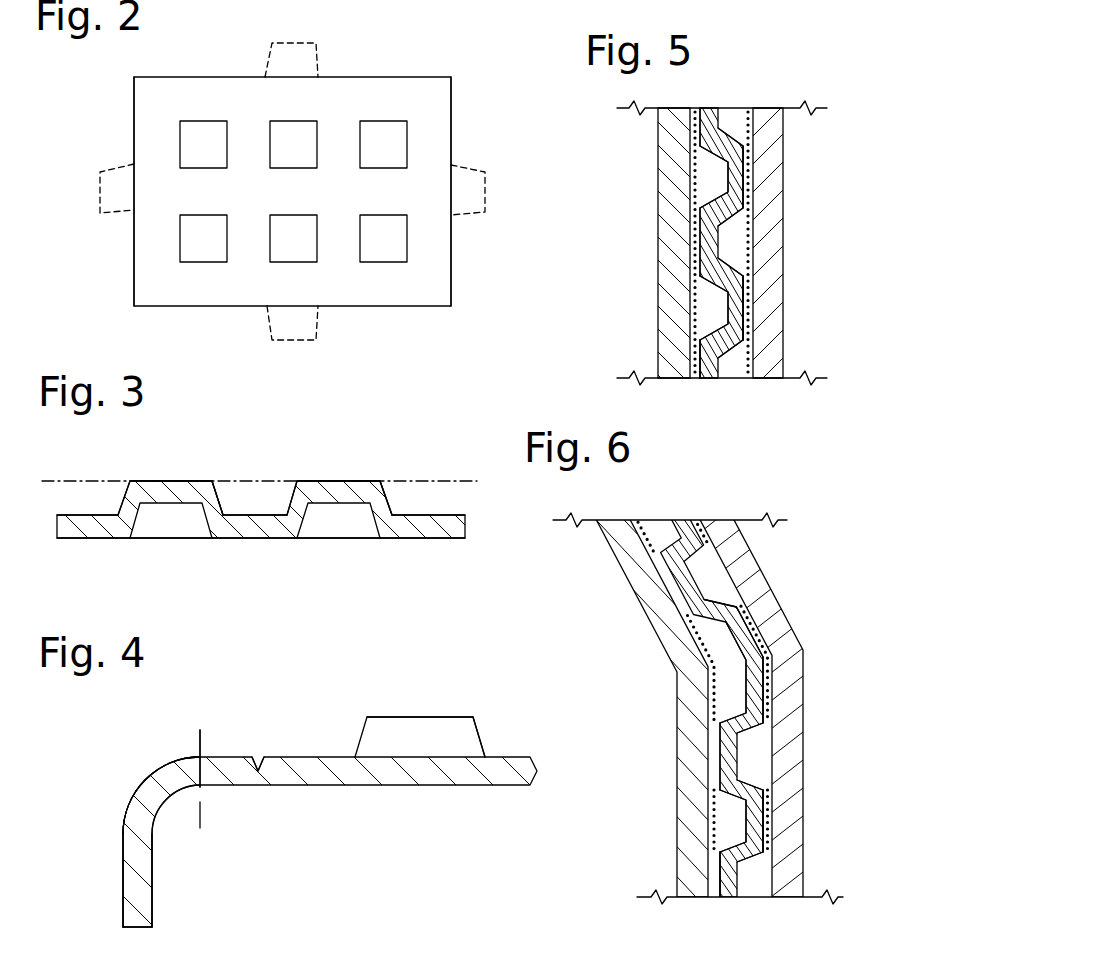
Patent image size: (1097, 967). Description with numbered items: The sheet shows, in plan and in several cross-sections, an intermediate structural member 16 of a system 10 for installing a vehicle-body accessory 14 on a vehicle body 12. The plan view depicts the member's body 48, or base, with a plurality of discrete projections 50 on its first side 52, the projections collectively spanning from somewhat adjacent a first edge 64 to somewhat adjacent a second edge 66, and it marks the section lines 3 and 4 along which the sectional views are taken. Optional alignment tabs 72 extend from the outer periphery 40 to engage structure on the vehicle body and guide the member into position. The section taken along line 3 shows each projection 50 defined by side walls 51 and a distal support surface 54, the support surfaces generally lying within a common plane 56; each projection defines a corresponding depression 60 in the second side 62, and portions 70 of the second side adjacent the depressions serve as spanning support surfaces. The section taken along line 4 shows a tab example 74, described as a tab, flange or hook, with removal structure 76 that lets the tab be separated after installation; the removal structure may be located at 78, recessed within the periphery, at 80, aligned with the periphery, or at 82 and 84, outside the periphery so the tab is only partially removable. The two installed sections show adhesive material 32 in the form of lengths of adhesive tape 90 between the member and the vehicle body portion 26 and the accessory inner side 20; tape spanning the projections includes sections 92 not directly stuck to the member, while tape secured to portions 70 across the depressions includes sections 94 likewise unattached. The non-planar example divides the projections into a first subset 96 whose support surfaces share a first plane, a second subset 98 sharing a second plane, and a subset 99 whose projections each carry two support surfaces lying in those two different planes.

In FIG. 2, the section line 3- 3 is at (210, 51).
In FIG. 2, the section line 4- 4 is at (110, 192).
In FIG. 5, the system 10 is at (786, 60).
In FIG. 6, the system 10 is at (753, 489).
In FIG. 5, the vehicle body 12 is at (656, 197).
In FIG. 6, the vehicle body 12 is at (673, 753).
In FIG. 5, the vehicle-body accessory 14 is at (788, 186).
In FIG. 6, the vehicle-body accessory 14 is at (808, 700).
In FIG. 2, the intermediate structural member 16 is at (436, 34).
In FIG. 3, the intermediate structural member 16 is at (430, 415).
In FIG. 4, the intermediate structural member 16 is at (420, 665).
In FIG. 5, the intermediate structural member 16 is at (725, 116).
In FIG. 6, the intermediate structural member 16 is at (712, 663).
In FIG. 5, the inner side 20 is at (740, 362).
In FIG. 6, the inner side 20 is at (767, 888).
In FIG. 5, the portion of vehicle body 26 is at (702, 346).
In FIG. 6, the portion of vehicle body 26 is at (696, 620).
In FIG. 2, the adhesive material 32 is at (469, 6).
In FIG. 5, the adhesive material 32 is at (610, 6).
In FIG. 2, the outer periphery 40 is at (390, 76).
In FIG. 4, the outer periphery 40 is at (207, 812).
In FIG. 2, the body 48 is at (360, 57).
In FIG. 3, the body 48 is at (285, 432).
In FIG. 4, the body 48 is at (292, 676).
In FIG. 2, the discrete projection 50 is at (283, 120).
In FIG. 3, the discrete projection 50 is at (185, 478).
In FIG. 4, the discrete projection 50 is at (440, 716).
In FIG. 5, the discrete projection 50 is at (733, 220).
In FIG. 6, the discrete projection 50 is at (701, 566).
In FIG. 3, the side wall 51 is at (220, 491).
In FIG. 4, the side wall 51 is at (483, 740).
In FIG. 2, the first side 52 is at (353, 201).
In FIG. 3, the first side 52 is at (312, 456).
In FIG. 4, the first side 52 is at (302, 705).
In FIG. 2, the support surface 54 is at (190, 156).
In FIG. 3, the support surface 54 is at (160, 480).
In FIG. 4, the support surface 54 is at (420, 717).
In FIG. 5, the support surface 54 is at (752, 152).
In FIG. 6, the support surface 54 is at (741, 622).
In FIG. 3, the common plane 56 is at (440, 480).
In FIG. 2, the depression 60 is at (375, 121).
In FIG. 3, the depression 60 is at (172, 521).
In FIG. 5, the depression 60 is at (715, 175).
In FIG. 6, the depression 60 is at (667, 547).
In FIG. 3, the second side 62 is at (212, 566).
In FIG. 2, the first edge 64 is at (134, 137).
In FIG. 2, the second edge 66 is at (451, 137).
In FIG. 3, the portion adjacent depressions 70 is at (80, 540).
In FIG. 5, the portion adjacent depressions 70 is at (698, 128).
In FIG. 6, the portion adjacent depressions 70 is at (718, 676).
In FIG. 2, the alignment tab 72 is at (292, 42).
In FIG. 4, the alignment tab 72 is at (80, 772).
In FIG. 4, the alignment tab example 74 is at (92, 812).
In FIG. 4, the removal structure 76 is at (133, 775).
In FIG. 4, the removal structure position 78 is at (258, 760).
In FIG. 4, the removal structure position 80 is at (207, 752).
In FIG. 4, the removal structure position 82 is at (146, 772).
In FIG. 4, the removal structure position 84 is at (122, 818).
In FIG. 5, the length of adhesive tape 90 is at (758, 158).
In FIG. 6, the length of adhesive tape 90 is at (706, 544).
In FIG. 5, the tape section 92 is at (736, 120).
In FIG. 5, the tape section 94 is at (706, 160).
In FIG. 6, the tape section 94 is at (654, 543).
In FIG. 6, the first subset of discrete projections 96 is at (768, 541).
In FIG. 6, the second subset of discrete projections 98 is at (855, 805).
In FIG. 6, the subset of discrete projections 99 is at (830, 618).